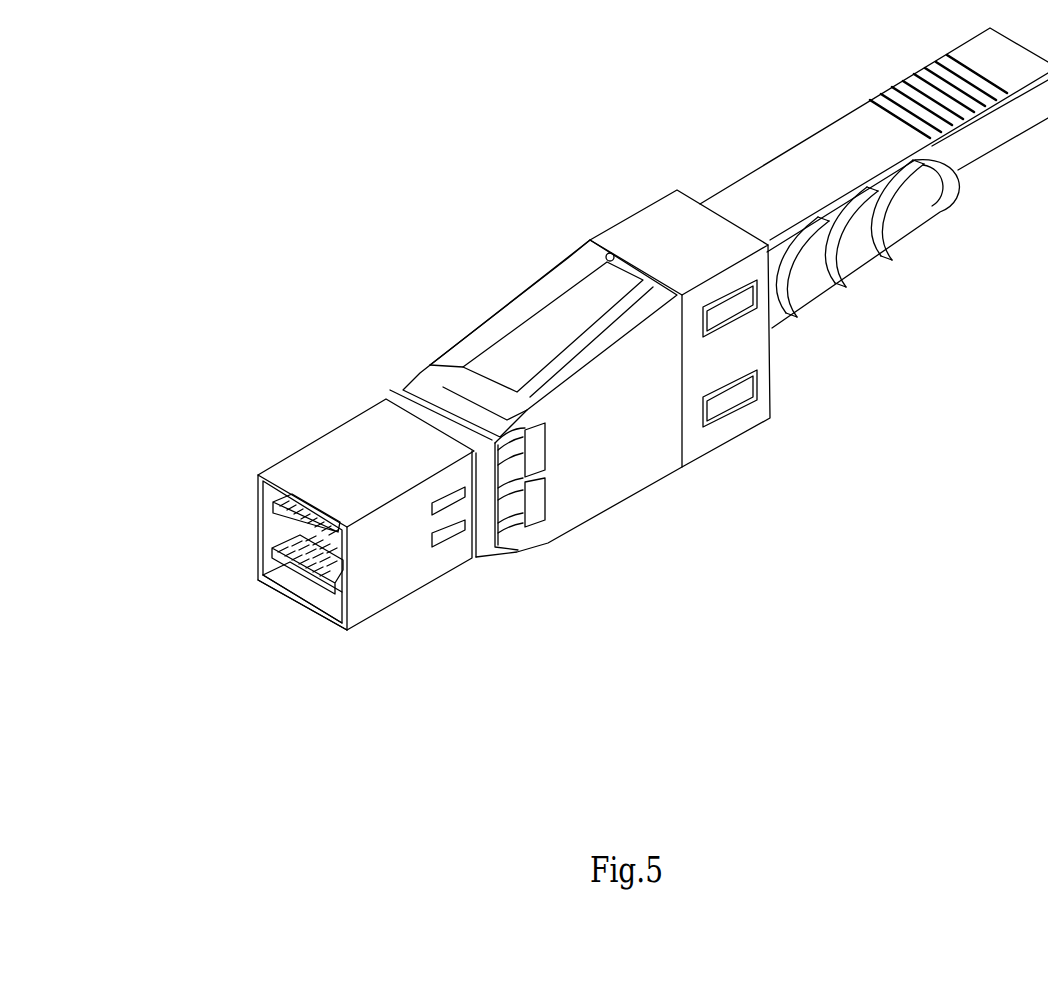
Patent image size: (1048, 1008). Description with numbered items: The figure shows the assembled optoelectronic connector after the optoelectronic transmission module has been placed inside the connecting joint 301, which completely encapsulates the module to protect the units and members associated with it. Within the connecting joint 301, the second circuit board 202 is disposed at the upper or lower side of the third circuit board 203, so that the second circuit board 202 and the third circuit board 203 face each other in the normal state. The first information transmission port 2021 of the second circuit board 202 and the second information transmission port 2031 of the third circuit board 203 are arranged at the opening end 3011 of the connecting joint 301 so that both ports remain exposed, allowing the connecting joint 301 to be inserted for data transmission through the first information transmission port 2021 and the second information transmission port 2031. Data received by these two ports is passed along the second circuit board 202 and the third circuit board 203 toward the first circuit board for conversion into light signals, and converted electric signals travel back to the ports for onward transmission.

The second circuit board 202 is at (257, 486).
The third circuit board 203 is at (257, 580).
The first information transmission port 2021 is at (298, 503).
The second information transmission port 2031 is at (333, 585).
The opening end 3011 is at (303, 593).
The connecting joint 301 is at (645, 450).